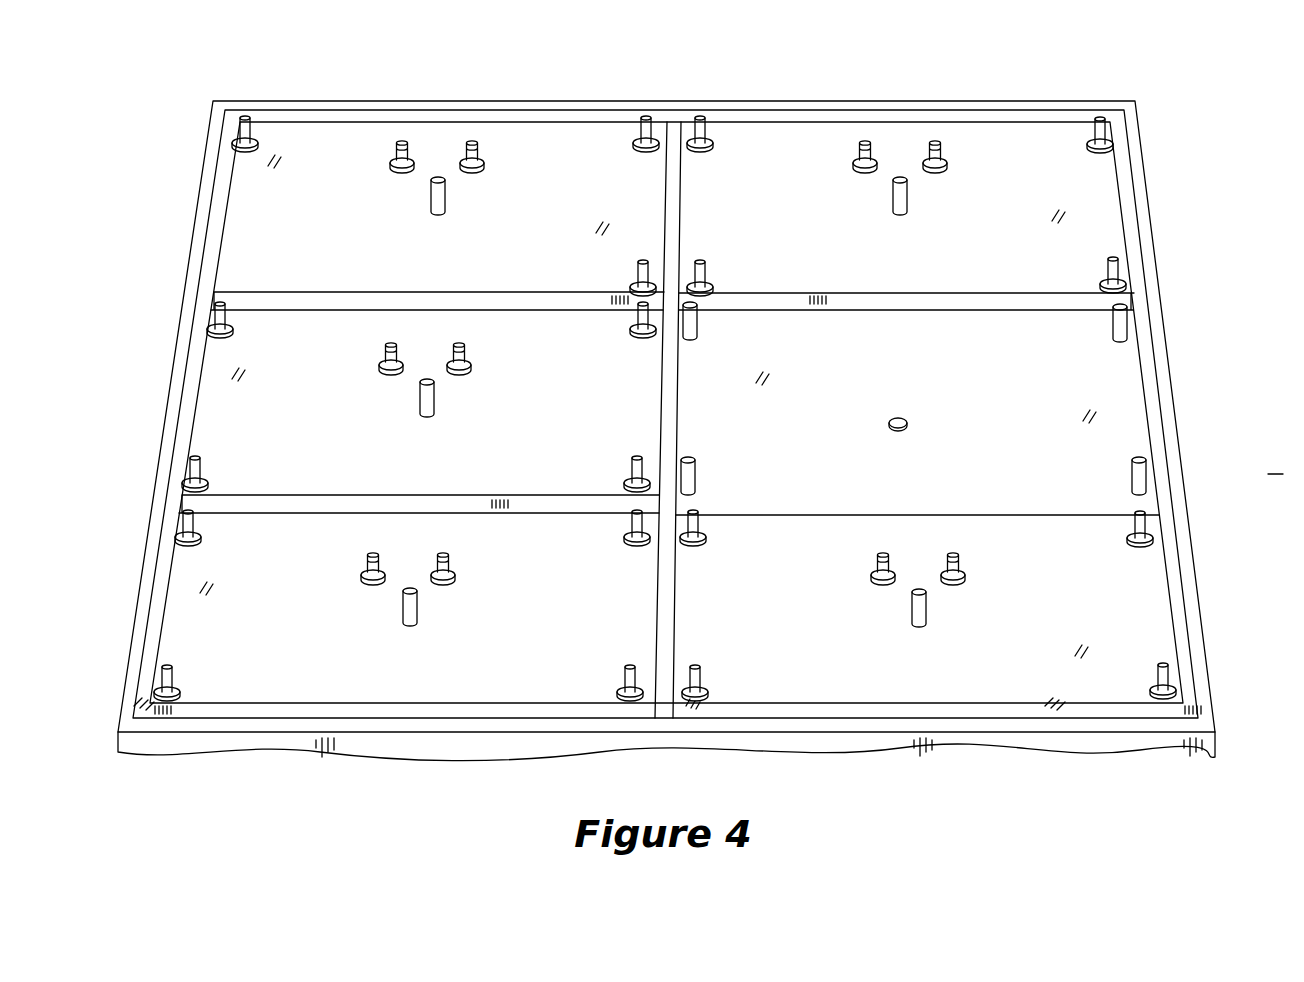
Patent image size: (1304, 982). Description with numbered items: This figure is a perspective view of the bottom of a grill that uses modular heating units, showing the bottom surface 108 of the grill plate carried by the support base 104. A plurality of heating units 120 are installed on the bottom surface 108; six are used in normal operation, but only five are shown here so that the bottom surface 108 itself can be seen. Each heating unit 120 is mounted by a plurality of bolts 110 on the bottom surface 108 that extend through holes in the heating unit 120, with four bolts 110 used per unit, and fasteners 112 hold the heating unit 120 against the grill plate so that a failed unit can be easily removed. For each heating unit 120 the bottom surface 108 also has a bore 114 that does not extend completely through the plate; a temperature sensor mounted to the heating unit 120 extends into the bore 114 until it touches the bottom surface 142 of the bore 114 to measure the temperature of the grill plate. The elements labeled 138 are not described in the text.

The support base 104 is at (322, 101).
The bottom surface 108 is at (1128, 387).
The bolts 110 is at (1106, 128).
The fasteners 112 is at (1102, 147).
The bore 114 is at (908, 428).
The heating units 120 is at (1045, 160).
The stud 138 is at (472, 141).
The bottom surface of the bore 142 is at (446, 200).